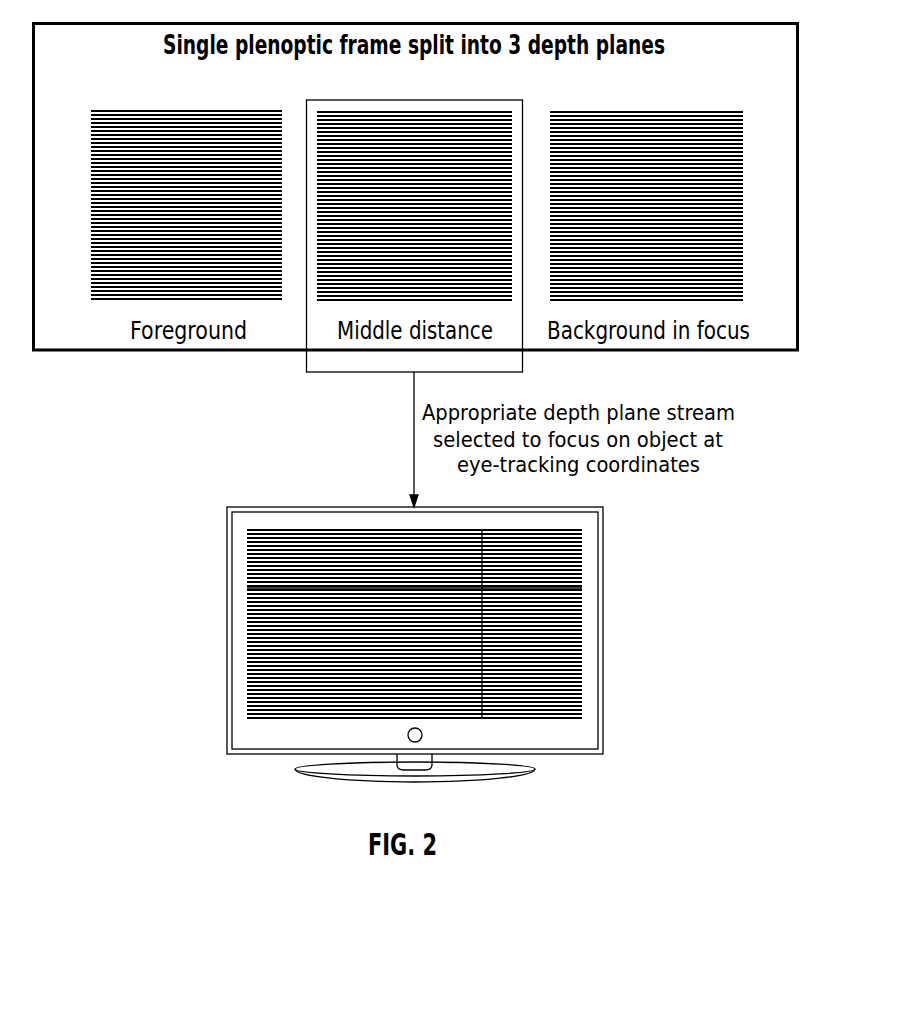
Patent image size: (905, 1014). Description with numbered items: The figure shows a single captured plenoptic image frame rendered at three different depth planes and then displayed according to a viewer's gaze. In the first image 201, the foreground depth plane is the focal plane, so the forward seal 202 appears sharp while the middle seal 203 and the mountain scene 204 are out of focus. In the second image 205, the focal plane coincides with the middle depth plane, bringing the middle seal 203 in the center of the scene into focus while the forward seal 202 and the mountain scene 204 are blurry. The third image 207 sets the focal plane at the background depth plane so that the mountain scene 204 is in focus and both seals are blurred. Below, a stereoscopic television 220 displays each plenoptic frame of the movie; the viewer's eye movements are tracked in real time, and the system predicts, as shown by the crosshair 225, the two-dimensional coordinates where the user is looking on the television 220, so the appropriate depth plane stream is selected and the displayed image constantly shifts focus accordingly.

The first image 201 is at (110, 116).
The forward seal 202 is at (92, 288).
The middle seal 203 is at (212, 162).
The mountain scene 204 is at (186, 124).
The second image 205 is at (345, 110).
The third image 207 is at (717, 110).
The stereoscopic television 220 is at (262, 507).
The crosshair 225 is at (500, 585).